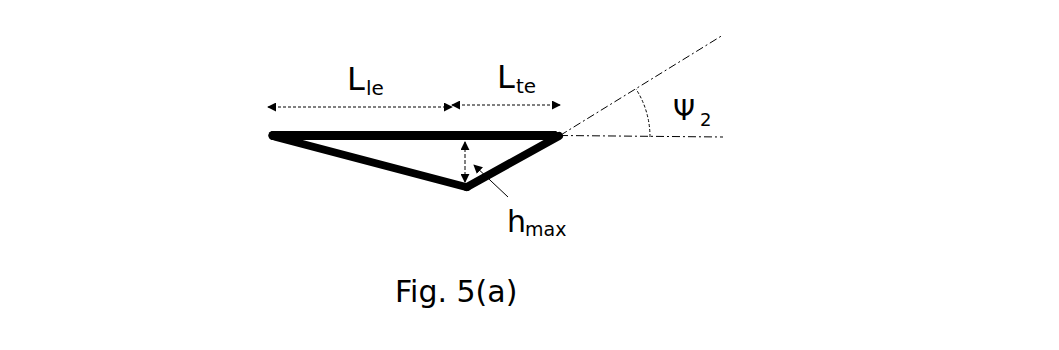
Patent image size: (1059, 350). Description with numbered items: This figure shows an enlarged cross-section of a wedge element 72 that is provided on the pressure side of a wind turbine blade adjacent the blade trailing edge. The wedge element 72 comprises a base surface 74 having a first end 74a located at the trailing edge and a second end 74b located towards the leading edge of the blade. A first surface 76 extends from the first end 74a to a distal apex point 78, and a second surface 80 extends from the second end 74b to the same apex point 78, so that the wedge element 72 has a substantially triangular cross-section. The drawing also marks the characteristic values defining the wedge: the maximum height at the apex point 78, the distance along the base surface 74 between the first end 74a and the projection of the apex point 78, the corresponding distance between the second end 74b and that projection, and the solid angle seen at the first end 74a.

The wedge element 72 is at (281, 81).
The base surface 74 is at (427, 130).
The first end 74a is at (562, 138).
The second end 74b is at (271, 139).
The first surface 76 is at (528, 156).
The distal apex point 78 is at (466, 191).
The second surface 80 is at (372, 165).